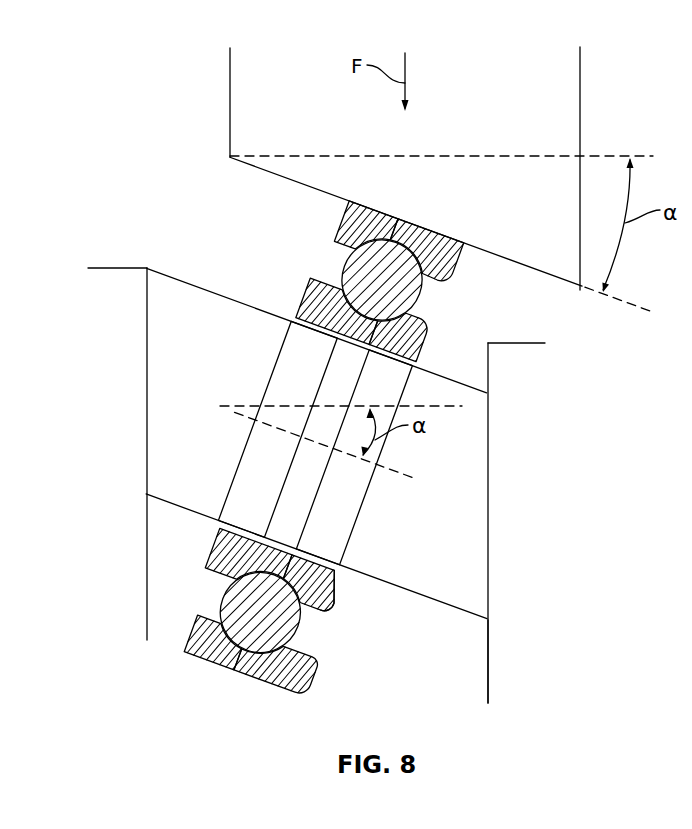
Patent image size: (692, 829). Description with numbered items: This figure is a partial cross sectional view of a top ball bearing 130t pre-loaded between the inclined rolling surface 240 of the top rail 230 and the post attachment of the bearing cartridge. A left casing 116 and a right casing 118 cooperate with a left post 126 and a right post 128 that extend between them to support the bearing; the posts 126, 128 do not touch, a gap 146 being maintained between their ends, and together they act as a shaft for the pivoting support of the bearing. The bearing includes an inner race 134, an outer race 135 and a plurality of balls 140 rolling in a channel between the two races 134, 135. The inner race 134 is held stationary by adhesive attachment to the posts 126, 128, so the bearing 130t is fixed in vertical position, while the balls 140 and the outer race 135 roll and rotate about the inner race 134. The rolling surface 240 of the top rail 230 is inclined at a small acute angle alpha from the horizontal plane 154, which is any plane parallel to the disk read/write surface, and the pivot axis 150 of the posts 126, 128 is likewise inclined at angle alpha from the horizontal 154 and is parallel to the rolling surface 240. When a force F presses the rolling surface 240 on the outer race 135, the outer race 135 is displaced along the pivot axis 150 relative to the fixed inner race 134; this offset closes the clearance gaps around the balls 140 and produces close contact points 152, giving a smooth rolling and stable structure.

The left casing 116 is at (113, 317).
The right casing 118 is at (539, 394).
The left post 126 is at (195, 385).
The right post 128 is at (457, 525).
The top ball bearing 130t is at (330, 596).
The inner race 134 is at (305, 292).
The outer race 135 is at (342, 223).
The balls 140 is at (345, 263).
The gap 146 is at (328, 390).
The pivot axis 150 is at (390, 470).
The contact points 152 is at (398, 218).
The horizontal plane 154 is at (590, 156).
The top rail 230 is at (568, 97).
The rolling surface 240 is at (256, 168).